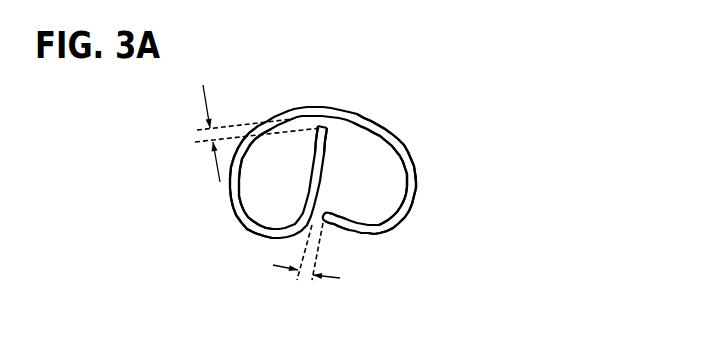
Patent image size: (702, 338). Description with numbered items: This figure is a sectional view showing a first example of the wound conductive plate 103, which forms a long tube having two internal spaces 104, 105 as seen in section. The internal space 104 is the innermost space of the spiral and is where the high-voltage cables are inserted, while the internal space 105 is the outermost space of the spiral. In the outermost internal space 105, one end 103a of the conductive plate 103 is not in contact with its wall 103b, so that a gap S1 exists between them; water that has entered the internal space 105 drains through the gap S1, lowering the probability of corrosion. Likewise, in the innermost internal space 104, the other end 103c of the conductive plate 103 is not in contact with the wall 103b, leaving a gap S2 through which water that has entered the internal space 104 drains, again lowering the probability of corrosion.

The conductive plate 103 is at (478, 116).
The one end of the conductive plate 103a is at (348, 214).
The wall of the conductive plate 103b is at (381, 141).
The other end of the conductive plate 103c is at (325, 128).
The internal space 104 is at (258, 195).
The internal space 105 is at (377, 169).
The gap S1 is at (306, 269).
The gap S2 is at (240, 133).